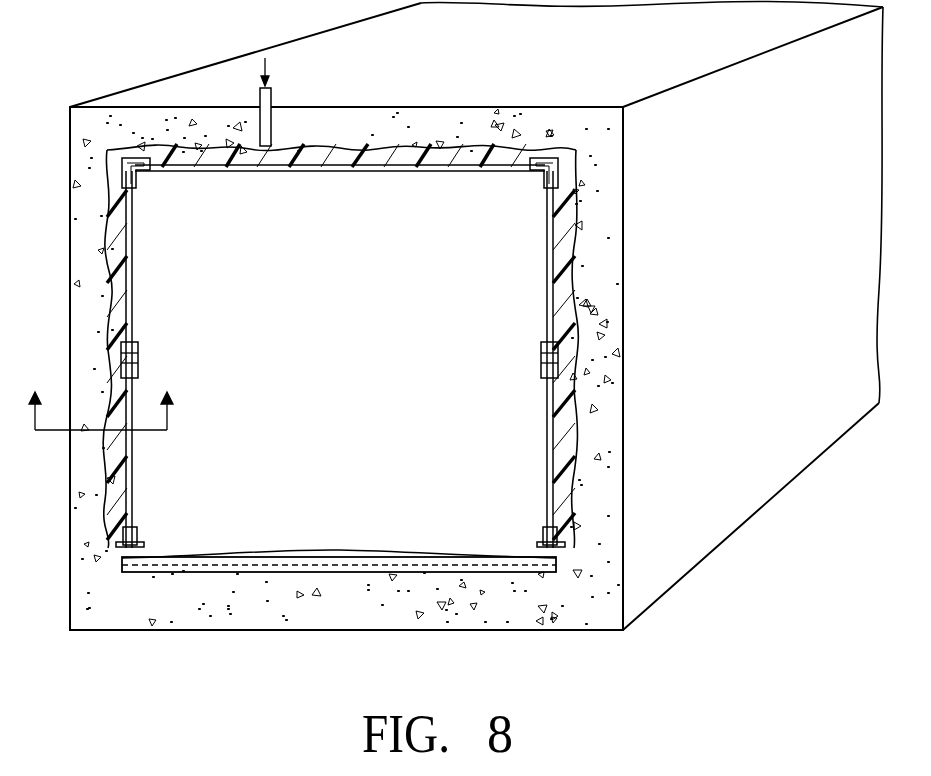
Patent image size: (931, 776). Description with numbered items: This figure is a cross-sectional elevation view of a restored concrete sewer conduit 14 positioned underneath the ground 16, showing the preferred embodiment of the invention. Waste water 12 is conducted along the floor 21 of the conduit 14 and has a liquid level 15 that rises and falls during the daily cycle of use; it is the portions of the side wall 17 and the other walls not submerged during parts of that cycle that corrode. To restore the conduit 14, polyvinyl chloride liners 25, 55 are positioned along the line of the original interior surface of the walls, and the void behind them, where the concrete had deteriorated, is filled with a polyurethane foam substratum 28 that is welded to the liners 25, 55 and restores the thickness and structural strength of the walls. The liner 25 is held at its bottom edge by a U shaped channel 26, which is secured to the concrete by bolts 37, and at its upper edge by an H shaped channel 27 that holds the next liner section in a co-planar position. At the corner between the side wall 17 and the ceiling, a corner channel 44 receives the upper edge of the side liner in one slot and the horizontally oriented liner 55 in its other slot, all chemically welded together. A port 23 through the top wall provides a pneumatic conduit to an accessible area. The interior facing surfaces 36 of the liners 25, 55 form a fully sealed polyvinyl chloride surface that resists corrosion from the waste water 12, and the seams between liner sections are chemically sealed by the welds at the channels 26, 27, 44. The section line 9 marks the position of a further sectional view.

The ground 16 is at (186, 31).
The concrete sewer conduit 14 is at (757, 511).
The floor 21 is at (352, 630).
The side wall 17 is at (78, 310).
The polyurethane foam substratum 28 is at (465, 156).
The polyvinyl chloride liner 25 is at (148, 466).
The interior facing surface 36 is at (272, 172).
The polyvinyl chloride liner 55 is at (336, 180).
The corner channel 44 is at (138, 180).
The H shaped channel 27 is at (139, 358).
The section line 9- 9 is at (101, 411).
The U shaped channel 26 is at (138, 528).
The bolts 37 is at (142, 544).
The liquid level 15 is at (390, 556).
The waste water 12 is at (288, 562).
The port 23 is at (272, 96).